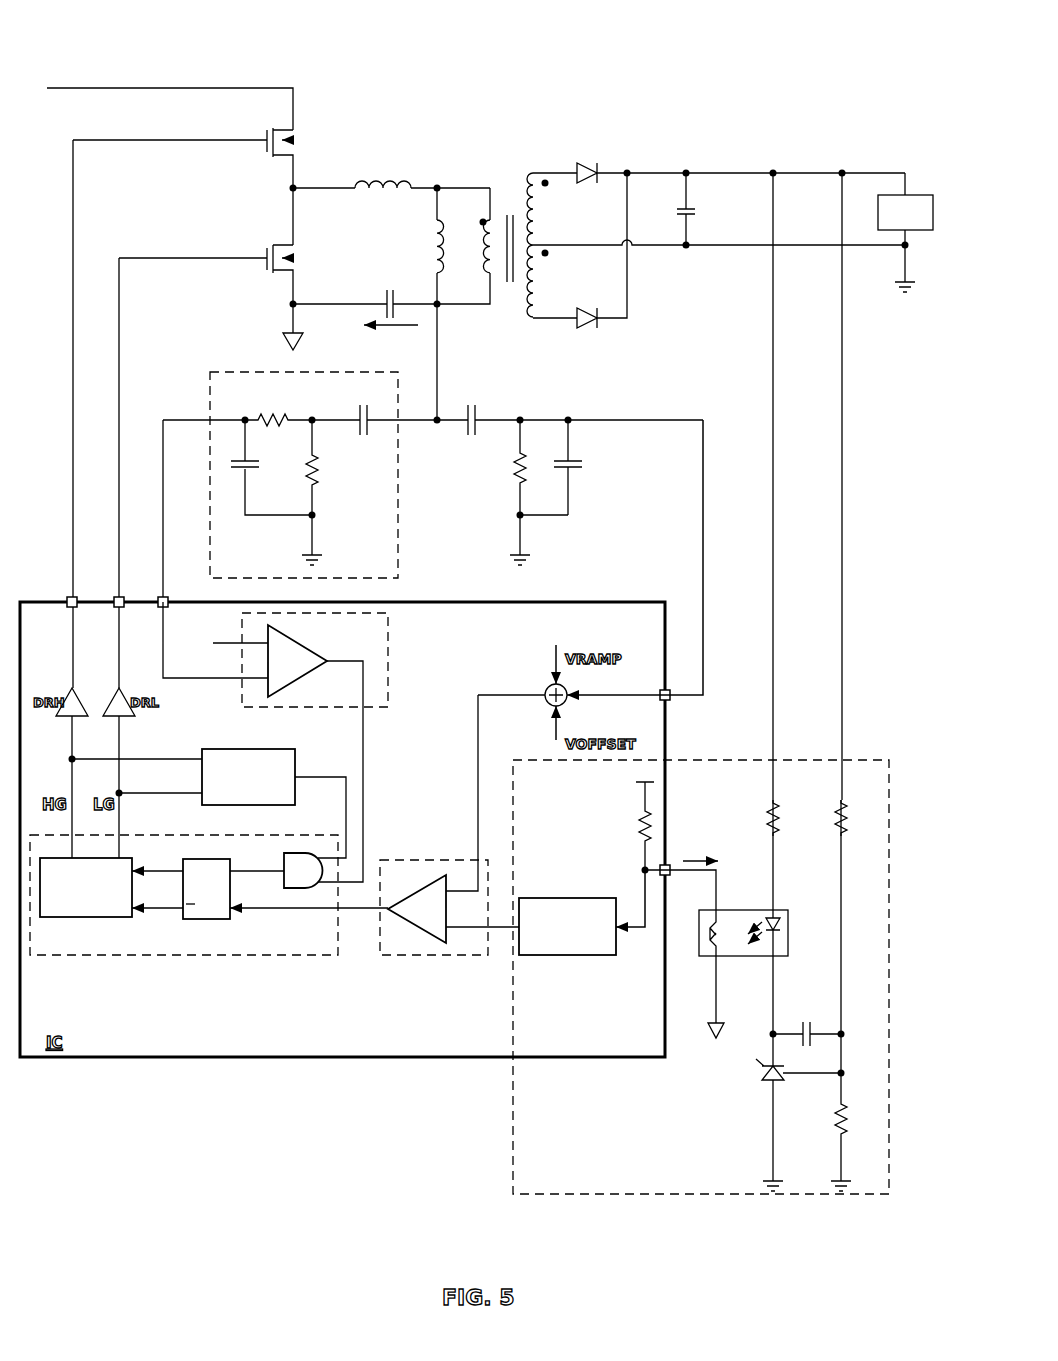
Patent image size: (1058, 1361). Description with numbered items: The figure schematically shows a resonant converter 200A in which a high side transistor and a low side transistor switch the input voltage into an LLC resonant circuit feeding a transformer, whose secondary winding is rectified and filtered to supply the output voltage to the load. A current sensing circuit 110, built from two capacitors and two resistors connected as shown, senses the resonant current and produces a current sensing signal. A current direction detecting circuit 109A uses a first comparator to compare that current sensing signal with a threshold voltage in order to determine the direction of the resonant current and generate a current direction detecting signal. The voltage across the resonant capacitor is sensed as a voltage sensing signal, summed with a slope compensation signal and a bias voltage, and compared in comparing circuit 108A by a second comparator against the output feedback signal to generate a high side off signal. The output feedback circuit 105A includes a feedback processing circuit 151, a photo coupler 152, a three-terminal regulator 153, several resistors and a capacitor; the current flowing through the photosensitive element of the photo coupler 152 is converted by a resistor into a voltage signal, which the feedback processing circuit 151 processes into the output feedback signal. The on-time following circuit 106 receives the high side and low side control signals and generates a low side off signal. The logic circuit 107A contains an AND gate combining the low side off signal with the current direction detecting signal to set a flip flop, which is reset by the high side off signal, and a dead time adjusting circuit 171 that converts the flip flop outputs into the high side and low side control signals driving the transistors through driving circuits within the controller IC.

The resonant converter 200A is at (845, 48).
The current sensing circuit 110 is at (232, 578).
The current direction detecting circuit 109A is at (255, 707).
The on-time following circuit 106 is at (222, 806).
The dead time adjusting circuit 171 is at (72, 918).
The logic circuit 107A is at (282, 955).
The comparing circuit 108A is at (405, 955).
The output feedback circuit 105A is at (519, 1194).
The feedback processing circuit 151 is at (575, 955).
The photo coupler 152 is at (712, 956).
The three-terminal regulator 153 is at (762, 1080).